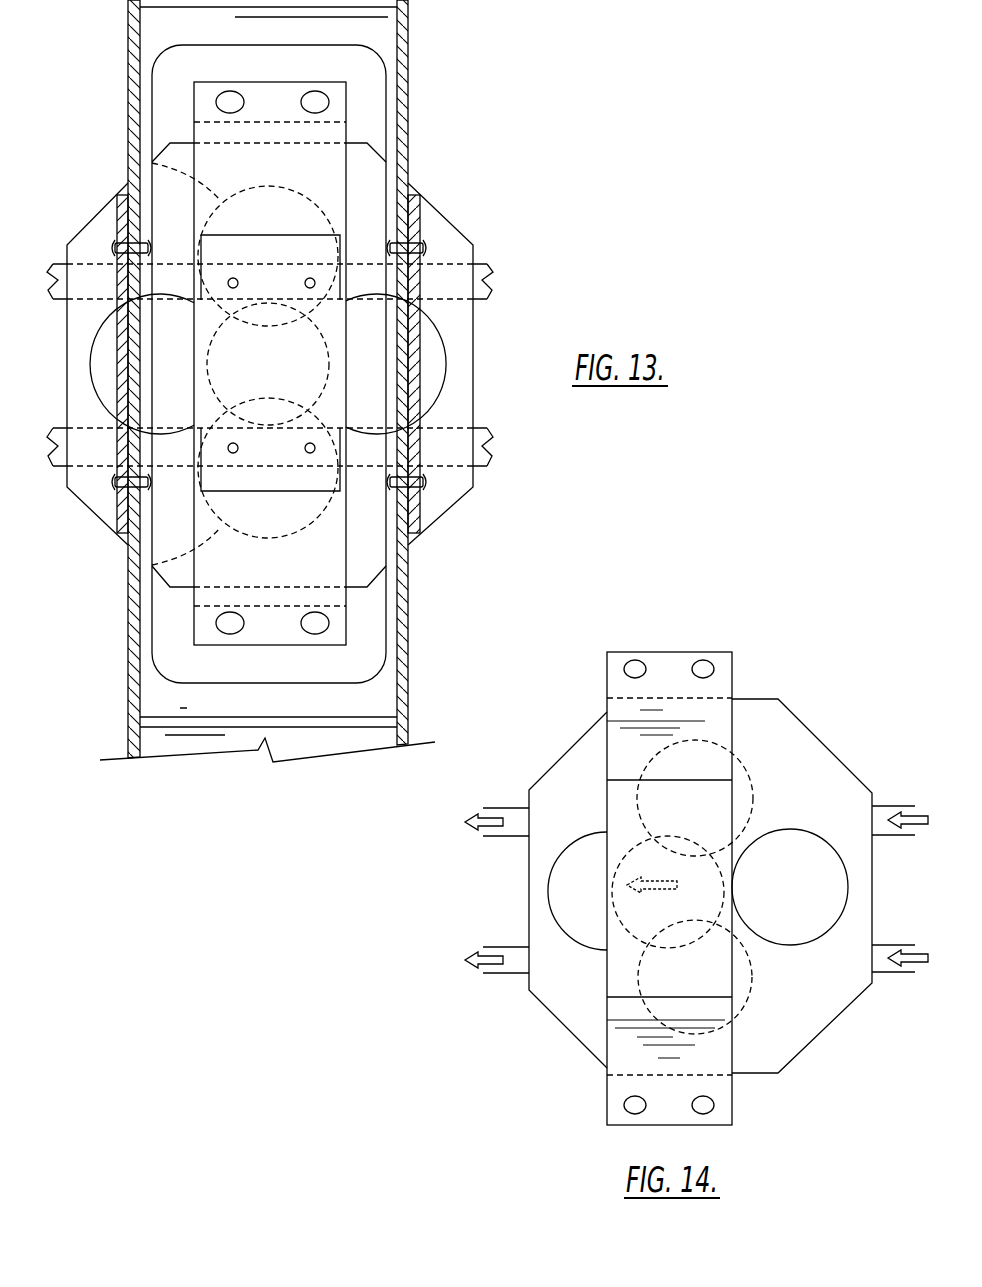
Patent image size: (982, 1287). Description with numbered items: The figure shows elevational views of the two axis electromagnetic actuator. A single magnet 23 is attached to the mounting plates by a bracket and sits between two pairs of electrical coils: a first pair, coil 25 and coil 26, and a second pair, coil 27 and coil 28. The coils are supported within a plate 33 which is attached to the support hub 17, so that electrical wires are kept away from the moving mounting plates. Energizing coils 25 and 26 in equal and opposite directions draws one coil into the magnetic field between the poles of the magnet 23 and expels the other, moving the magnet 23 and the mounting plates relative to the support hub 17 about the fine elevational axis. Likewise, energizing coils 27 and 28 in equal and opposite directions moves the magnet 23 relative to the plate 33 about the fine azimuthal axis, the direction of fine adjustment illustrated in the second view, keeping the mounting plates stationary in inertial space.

In FIG. 13, the support hub 17 is at (175, 25).
In FIG. 13, the magnet 23 is at (350, 99).
In FIG. 14, the magnet 23 is at (612, 678).
In FIG. 13, the coil 25 is at (146, 162).
In FIG. 14, the coil 25 is at (745, 760).
In FIG. 13, the coil 26 is at (146, 566).
In FIG. 14, the coil 26 is at (733, 1021).
In FIG. 13, the coil 27 is at (108, 416).
In FIG. 14, the coil 27 is at (550, 892).
In FIG. 13, the coil 28 is at (445, 340).
In FIG. 14, the coil 28 is at (813, 848).
In FIG. 13, the plate 33 is at (460, 228).
In FIG. 14, the plate 33 is at (817, 768).